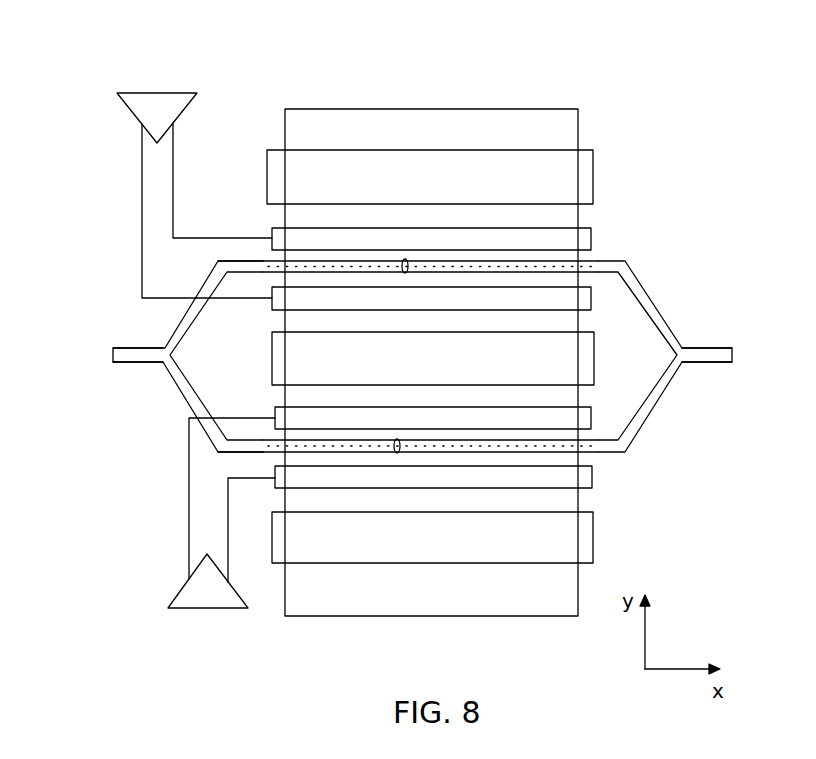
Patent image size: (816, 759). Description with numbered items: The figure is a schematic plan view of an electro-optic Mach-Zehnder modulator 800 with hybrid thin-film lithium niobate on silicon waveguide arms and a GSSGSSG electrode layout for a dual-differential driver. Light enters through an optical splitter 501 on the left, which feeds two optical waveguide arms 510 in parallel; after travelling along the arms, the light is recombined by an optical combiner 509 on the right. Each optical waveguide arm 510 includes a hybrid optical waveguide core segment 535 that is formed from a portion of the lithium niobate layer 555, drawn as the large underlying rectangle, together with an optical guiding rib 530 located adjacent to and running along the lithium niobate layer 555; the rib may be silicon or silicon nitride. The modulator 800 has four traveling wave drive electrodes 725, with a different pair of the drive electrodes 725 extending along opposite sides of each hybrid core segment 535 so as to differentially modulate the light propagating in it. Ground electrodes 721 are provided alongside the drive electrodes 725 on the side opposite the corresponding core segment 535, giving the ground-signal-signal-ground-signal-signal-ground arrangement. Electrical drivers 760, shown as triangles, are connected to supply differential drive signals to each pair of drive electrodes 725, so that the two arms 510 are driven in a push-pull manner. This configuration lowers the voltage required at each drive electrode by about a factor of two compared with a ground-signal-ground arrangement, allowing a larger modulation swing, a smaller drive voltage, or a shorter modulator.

The electro-optic MZM 800 is at (457, 38).
The lithium niobate layer 555 is at (458, 108).
The ground electrodes 721 is at (593, 183).
The TW drive electrodes 725 is at (591, 233).
The optical guiding rib 530 is at (380, 259).
The hybrid optical waveguide core segment 535 is at (405, 259).
The optical splitter 501 is at (158, 331).
The optical combiner 509 is at (688, 328).
The optical waveguide arms 510 is at (253, 252).
The electrical driver 760 is at (130, 108).